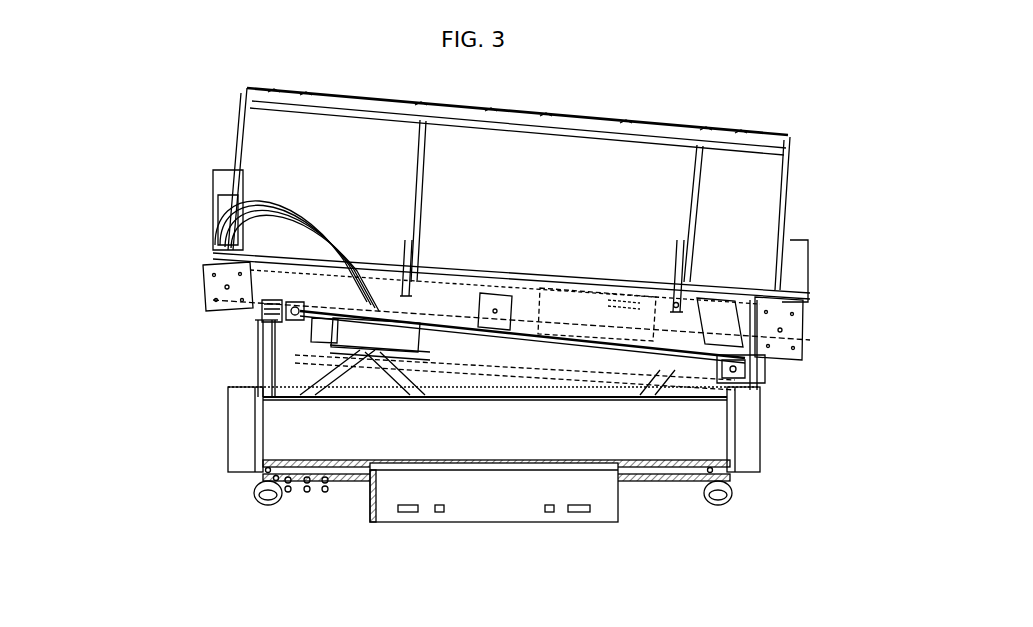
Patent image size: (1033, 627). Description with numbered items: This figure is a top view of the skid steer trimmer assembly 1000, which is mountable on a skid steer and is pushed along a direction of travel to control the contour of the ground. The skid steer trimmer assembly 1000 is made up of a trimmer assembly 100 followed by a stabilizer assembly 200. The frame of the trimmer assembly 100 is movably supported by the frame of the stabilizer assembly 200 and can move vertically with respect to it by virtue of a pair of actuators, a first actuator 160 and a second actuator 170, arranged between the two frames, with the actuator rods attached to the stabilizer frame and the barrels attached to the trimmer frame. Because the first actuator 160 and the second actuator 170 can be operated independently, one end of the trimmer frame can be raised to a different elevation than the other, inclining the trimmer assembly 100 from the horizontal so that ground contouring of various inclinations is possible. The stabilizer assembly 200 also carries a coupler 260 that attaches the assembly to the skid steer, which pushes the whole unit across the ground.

The skid steer trimmer assembly 1000 is at (153, 223).
The trimmer assembly 100 is at (822, 142).
The first actuator 160 is at (735, 358).
The second actuator 170 is at (263, 315).
The stabilizer assembly 200 is at (225, 517).
The coupler 260 is at (487, 512).